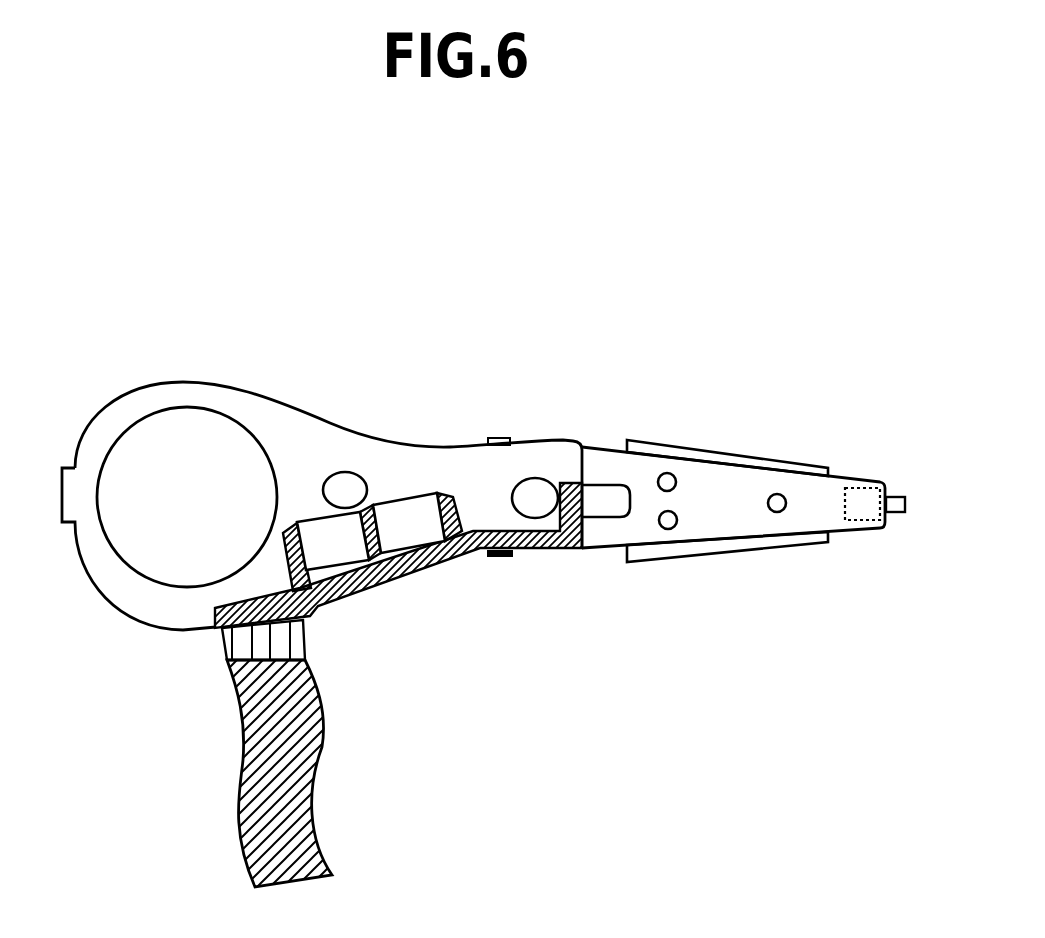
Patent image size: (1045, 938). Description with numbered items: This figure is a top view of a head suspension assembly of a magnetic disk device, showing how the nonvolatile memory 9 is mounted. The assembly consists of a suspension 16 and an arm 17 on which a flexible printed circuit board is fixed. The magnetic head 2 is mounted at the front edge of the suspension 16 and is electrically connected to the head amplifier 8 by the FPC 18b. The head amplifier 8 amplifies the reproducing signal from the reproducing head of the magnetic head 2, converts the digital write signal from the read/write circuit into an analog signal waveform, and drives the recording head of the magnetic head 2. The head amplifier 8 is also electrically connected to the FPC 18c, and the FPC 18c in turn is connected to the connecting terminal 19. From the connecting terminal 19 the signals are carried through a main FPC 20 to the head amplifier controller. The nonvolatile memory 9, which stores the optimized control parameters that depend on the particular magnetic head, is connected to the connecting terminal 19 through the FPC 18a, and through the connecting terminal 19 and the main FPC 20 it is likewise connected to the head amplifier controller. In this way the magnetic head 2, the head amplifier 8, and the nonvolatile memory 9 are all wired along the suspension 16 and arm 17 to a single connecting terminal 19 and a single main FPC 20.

The magnetic head 2 is at (862, 492).
The head amplifier 8 is at (417, 537).
The nonvolatile memory 9 is at (324, 556).
The suspension 16 is at (650, 470).
The arm 17 is at (285, 427).
The FPC 18a is at (226, 612).
The FPC 18b is at (530, 550).
The FPC 18c is at (385, 578).
The connecting terminal 19 is at (222, 647).
The main FPC 20 is at (243, 760).